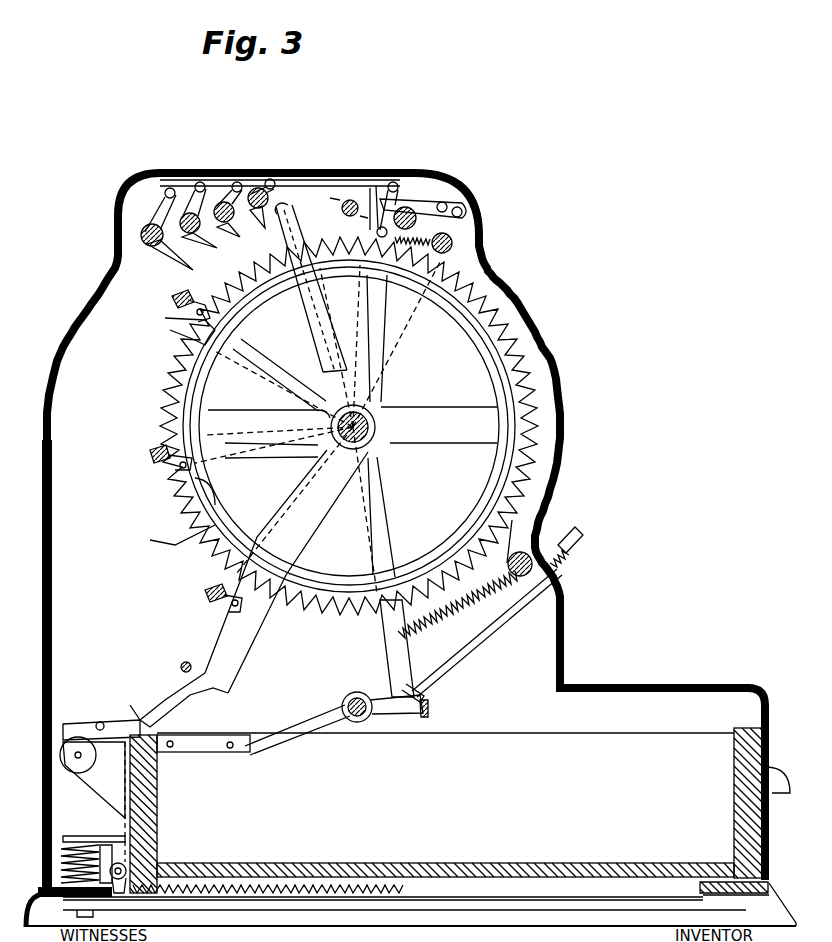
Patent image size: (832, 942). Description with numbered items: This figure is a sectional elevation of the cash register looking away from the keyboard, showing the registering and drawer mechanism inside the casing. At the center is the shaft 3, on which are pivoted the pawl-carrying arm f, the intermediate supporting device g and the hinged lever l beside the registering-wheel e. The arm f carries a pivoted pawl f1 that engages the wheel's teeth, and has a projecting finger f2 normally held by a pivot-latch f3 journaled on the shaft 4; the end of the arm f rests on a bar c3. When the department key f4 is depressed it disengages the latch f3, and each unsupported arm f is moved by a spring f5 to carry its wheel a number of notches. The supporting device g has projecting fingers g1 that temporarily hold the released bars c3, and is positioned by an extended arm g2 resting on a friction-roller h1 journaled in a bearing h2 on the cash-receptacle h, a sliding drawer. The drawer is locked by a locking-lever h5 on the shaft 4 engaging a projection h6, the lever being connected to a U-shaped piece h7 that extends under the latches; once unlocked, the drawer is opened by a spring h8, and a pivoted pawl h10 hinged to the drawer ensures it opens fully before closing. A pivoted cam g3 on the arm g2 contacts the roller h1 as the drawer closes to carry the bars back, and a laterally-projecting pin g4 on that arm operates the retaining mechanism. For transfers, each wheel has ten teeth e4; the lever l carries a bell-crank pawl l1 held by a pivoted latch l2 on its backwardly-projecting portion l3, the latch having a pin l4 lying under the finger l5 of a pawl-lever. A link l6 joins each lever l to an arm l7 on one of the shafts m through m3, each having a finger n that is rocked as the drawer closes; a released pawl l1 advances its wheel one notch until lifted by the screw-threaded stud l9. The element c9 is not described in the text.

The central rod or shaft 3 is at (370, 402).
The shaft or rod 4 is at (343, 700).
The registering-wheel e is at (295, 932).
The teeth or projections e4 is at (462, 280).
The pawl-carrying arm f is at (278, 368).
The pivoted pawl f1 is at (195, 308).
The projecting finger f2 is at (388, 550).
The pivot-latch f3 is at (372, 690).
The key f4 is at (505, 605).
The spring f5 is at (462, 622).
The intermediate supporting device g is at (285, 245).
The projecting fingers g1 is at (180, 340).
The extended arm or finger g2 is at (230, 635).
The pivoted cam portion g3 is at (107, 735).
The laterally-projecting pin g4 is at (184, 662).
The cash-receptacle h is at (460, 810).
The friction-roller h1 is at (62, 763).
The bearing h2 is at (94, 802).
The locking-lever h5 is at (288, 735).
The projection h6 is at (232, 755).
The U-shaped piece h7 is at (430, 715).
The spring h8 is at (80, 842).
The pivoted pawl h10 is at (125, 893).
The hinged lever l is at (378, 310).
The pivoted pawl l1 is at (373, 190).
The pivoted latch l2 is at (398, 205).
The backwardly-projecting portion l3 is at (440, 200).
The laterally-extending pin l4 is at (466, 213).
The projecting finger l5 is at (455, 200).
The link l6 is at (185, 192).
The arm l7 is at (140, 212).
The screw-threaded stud l9 is at (340, 200).
The shaft or rod m is at (150, 246).
The shaft or rod m3 is at (288, 204).
The projecting finger n is at (172, 262).
The bar c3 is at (172, 300).
The screw c9 is at (339, 203).